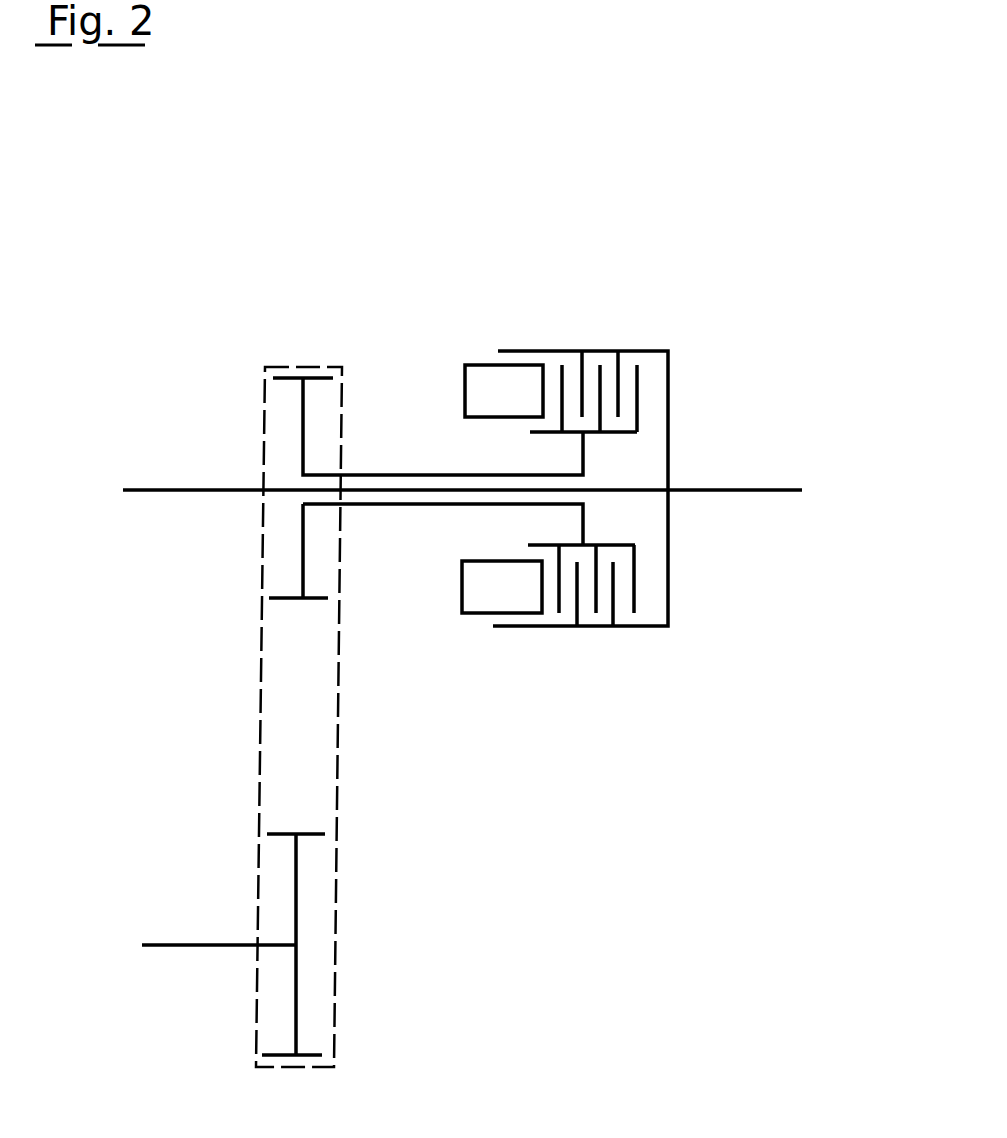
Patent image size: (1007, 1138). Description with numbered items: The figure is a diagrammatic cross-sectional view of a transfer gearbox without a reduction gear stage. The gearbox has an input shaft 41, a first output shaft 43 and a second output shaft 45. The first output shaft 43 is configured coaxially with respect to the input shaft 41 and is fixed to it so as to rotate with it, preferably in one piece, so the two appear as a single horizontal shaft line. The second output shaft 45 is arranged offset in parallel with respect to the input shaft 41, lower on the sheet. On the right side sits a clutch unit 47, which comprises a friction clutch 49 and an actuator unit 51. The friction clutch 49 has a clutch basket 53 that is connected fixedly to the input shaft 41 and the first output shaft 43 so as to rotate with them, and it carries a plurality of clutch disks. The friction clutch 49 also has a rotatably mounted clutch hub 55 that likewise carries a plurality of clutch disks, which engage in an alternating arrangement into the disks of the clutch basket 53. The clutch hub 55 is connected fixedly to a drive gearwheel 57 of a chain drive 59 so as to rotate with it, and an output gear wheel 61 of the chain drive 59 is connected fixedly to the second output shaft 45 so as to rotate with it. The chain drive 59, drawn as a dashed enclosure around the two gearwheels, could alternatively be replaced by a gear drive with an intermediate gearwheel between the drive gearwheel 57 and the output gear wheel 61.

The input shaft 41 is at (158, 488).
The first output shaft 43 is at (773, 488).
The second output shaft 45 is at (168, 945).
The clutch unit 47 is at (534, 316).
The friction clutch 49 is at (607, 357).
The actuator unit 51 is at (457, 385).
The clutch basket 53 is at (652, 348).
The clutch hub 55 is at (619, 433).
The drive gearwheel 57 is at (303, 410).
The chain drive 59 is at (260, 730).
The output gear wheel 61 is at (293, 1002).